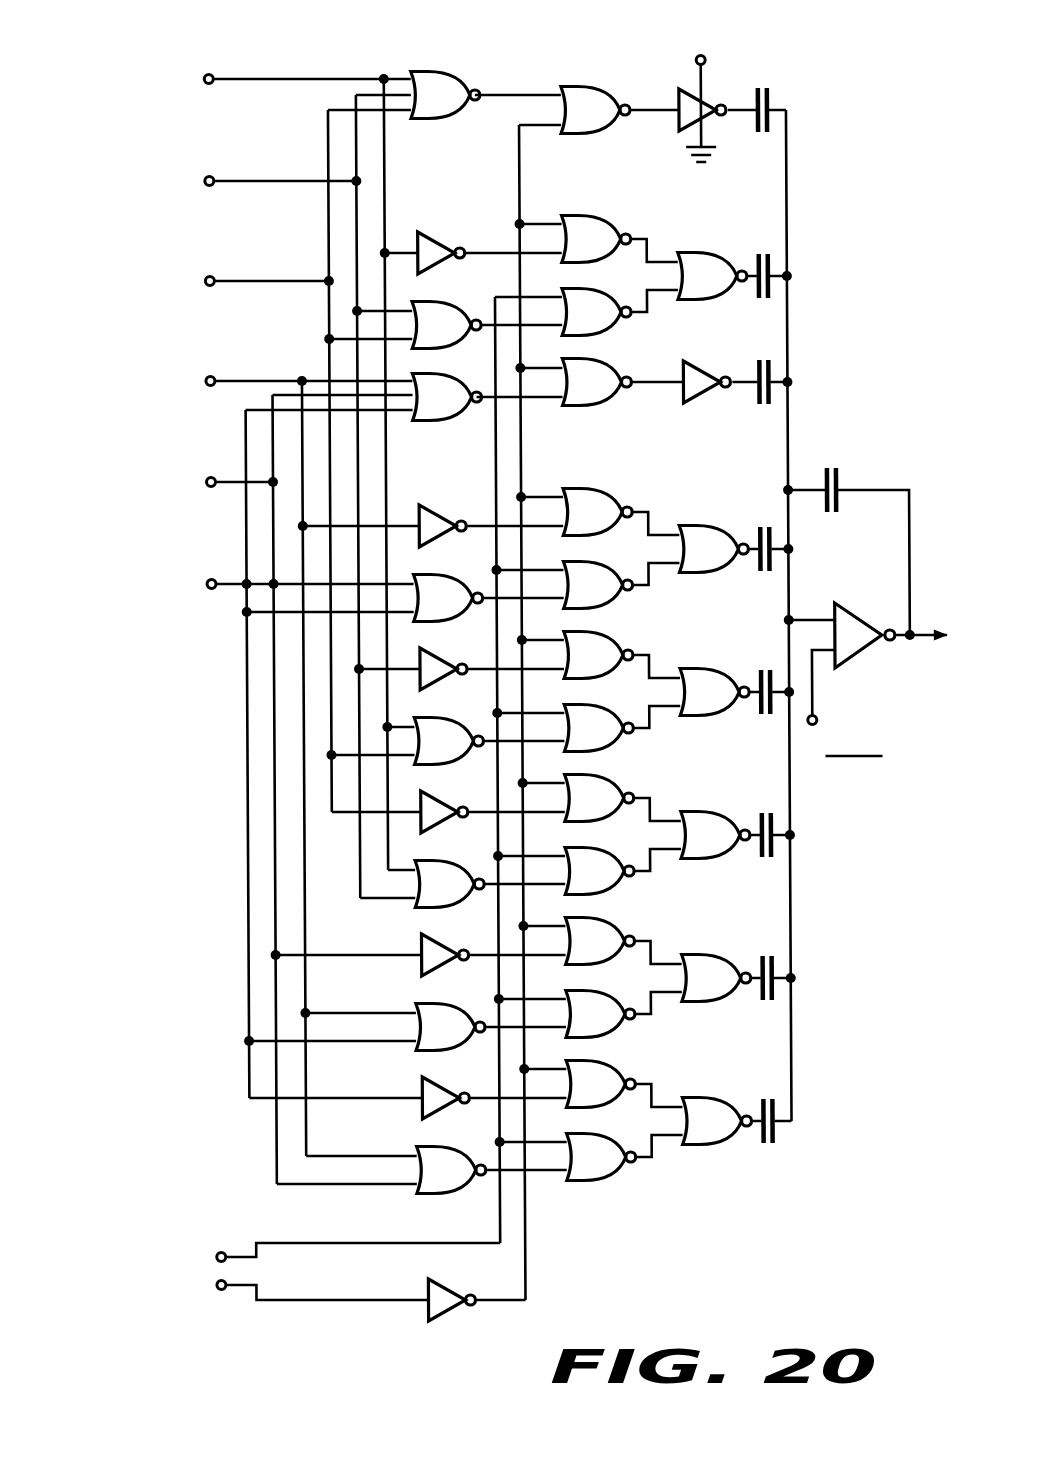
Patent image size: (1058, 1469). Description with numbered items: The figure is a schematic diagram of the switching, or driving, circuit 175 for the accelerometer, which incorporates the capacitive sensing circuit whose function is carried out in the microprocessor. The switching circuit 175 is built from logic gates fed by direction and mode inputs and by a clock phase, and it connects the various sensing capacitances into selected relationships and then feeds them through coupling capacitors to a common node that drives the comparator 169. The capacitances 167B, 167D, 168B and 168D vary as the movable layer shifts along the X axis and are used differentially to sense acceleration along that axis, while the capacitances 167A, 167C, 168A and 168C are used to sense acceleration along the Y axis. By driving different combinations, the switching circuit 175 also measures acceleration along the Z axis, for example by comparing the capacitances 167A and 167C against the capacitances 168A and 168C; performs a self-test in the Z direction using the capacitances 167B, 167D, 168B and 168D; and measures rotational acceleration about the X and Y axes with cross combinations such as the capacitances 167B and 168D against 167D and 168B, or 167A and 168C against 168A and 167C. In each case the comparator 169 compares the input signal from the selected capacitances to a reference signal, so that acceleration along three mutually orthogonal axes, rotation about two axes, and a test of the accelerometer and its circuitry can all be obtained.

The capacitance 167A is at (757, 80).
The capacitance 168A is at (766, 247).
The capacitance 167B is at (766, 354).
The capacitance 168B is at (766, 520).
The capacitance 167C is at (766, 663).
The capacitance 168C is at (766, 806).
The capacitance 167D is at (766, 949).
The capacitance 168D is at (766, 1092).
The comparator 169 is at (860, 657).
The switching circuit 175 is at (513, 665).